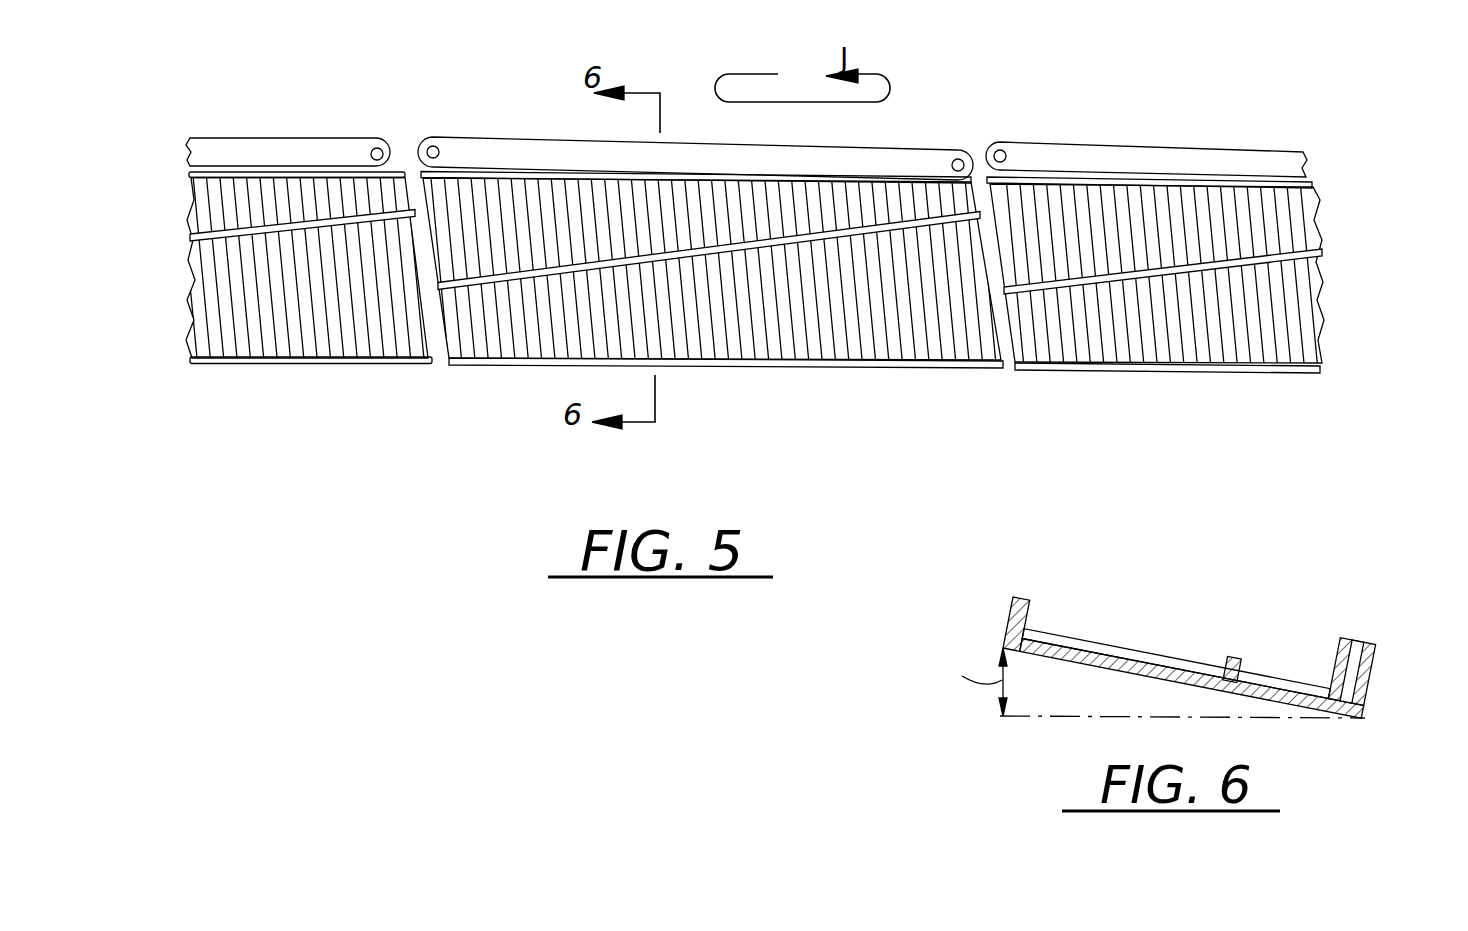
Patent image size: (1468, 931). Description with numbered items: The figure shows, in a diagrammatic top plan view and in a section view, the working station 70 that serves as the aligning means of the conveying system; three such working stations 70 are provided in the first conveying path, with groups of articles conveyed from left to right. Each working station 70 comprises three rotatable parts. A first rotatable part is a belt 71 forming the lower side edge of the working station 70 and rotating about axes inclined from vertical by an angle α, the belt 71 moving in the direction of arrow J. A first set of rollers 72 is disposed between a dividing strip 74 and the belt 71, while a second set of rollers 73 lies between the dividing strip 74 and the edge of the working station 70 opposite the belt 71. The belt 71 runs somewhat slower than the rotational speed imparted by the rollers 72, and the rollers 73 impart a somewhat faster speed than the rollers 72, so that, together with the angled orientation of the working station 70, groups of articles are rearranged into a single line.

In FIG. 5, the working station 70 is at (360, 378).
In FIG. 6, the working station 70 is at (1147, 638).
In FIG. 5, the belt 71 is at (333, 148).
In FIG. 6, the belt 71 is at (1367, 665).
In FIG. 5, the rollers 72 is at (235, 200).
In FIG. 6, the rollers 72 is at (1275, 680).
In FIG. 5, the rollers 73 is at (268, 335).
In FIG. 6, the rollers 73 is at (1075, 638).
In FIG. 5, the dividing strip 74 is at (210, 225).